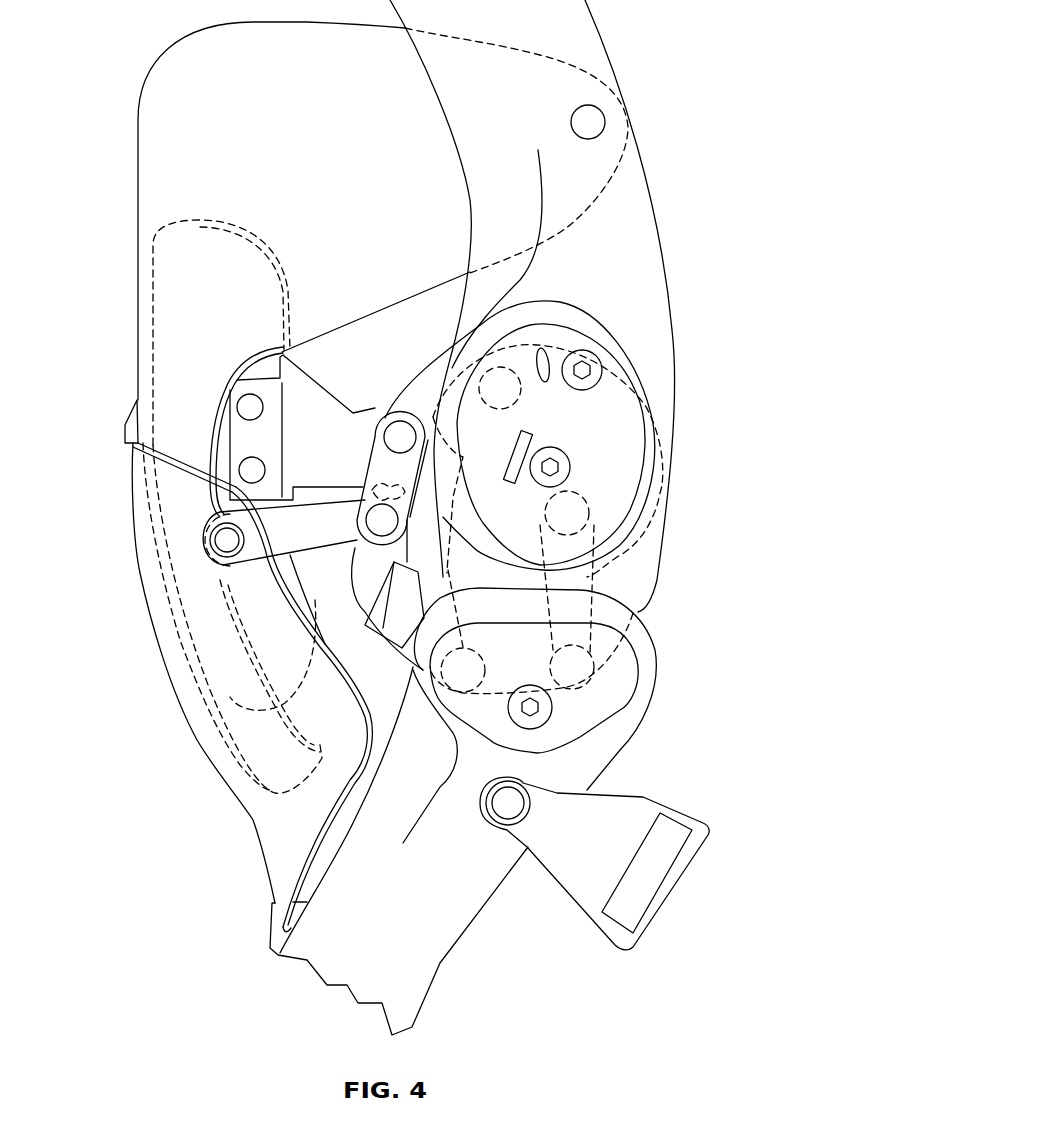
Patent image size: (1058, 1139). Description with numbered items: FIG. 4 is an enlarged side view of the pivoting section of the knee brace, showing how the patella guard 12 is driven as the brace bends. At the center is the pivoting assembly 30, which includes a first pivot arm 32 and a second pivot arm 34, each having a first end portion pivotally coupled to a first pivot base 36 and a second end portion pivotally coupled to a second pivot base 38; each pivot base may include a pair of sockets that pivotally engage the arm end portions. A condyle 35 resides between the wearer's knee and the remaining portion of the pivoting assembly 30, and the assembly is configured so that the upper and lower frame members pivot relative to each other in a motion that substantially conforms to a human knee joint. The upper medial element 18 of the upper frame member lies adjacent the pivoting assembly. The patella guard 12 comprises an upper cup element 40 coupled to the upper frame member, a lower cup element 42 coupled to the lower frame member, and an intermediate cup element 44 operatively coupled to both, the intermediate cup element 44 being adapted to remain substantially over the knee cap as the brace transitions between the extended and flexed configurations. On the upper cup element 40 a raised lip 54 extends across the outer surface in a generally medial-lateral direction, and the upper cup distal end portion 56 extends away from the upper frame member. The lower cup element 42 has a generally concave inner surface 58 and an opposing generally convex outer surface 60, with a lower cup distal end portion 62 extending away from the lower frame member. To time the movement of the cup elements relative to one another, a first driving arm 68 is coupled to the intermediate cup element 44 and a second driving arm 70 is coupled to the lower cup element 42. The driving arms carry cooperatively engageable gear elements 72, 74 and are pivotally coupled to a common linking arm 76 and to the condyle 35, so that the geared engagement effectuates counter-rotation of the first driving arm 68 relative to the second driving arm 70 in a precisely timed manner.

The patella guard 12 is at (103, 467).
The upper medial element 18 is at (634, 166).
The pivoting assembly 30 is at (663, 570).
The first pivot arm 32 is at (597, 533).
The second pivot arm 34 is at (450, 390).
The condyle 35 is at (638, 587).
The first pivot base 36 is at (627, 442).
The second pivot base 38 is at (620, 697).
The upper cup element 40 is at (145, 185).
The lower cup element 42 is at (248, 820).
The intermediate cup element 44 is at (185, 302).
The raised lip 54 is at (123, 428).
The upper cup distal end portion 56 is at (253, 760).
The inner surface 58 is at (340, 680).
The outer surface 60 is at (160, 650).
The lower cup distal end portion 62 is at (173, 477).
The first driving arm 68 is at (297, 450).
The second driving arm 70 is at (284, 543).
The gear element 72 is at (373, 467).
The gear element 74 is at (370, 565).
The linking arm 76 is at (379, 481).